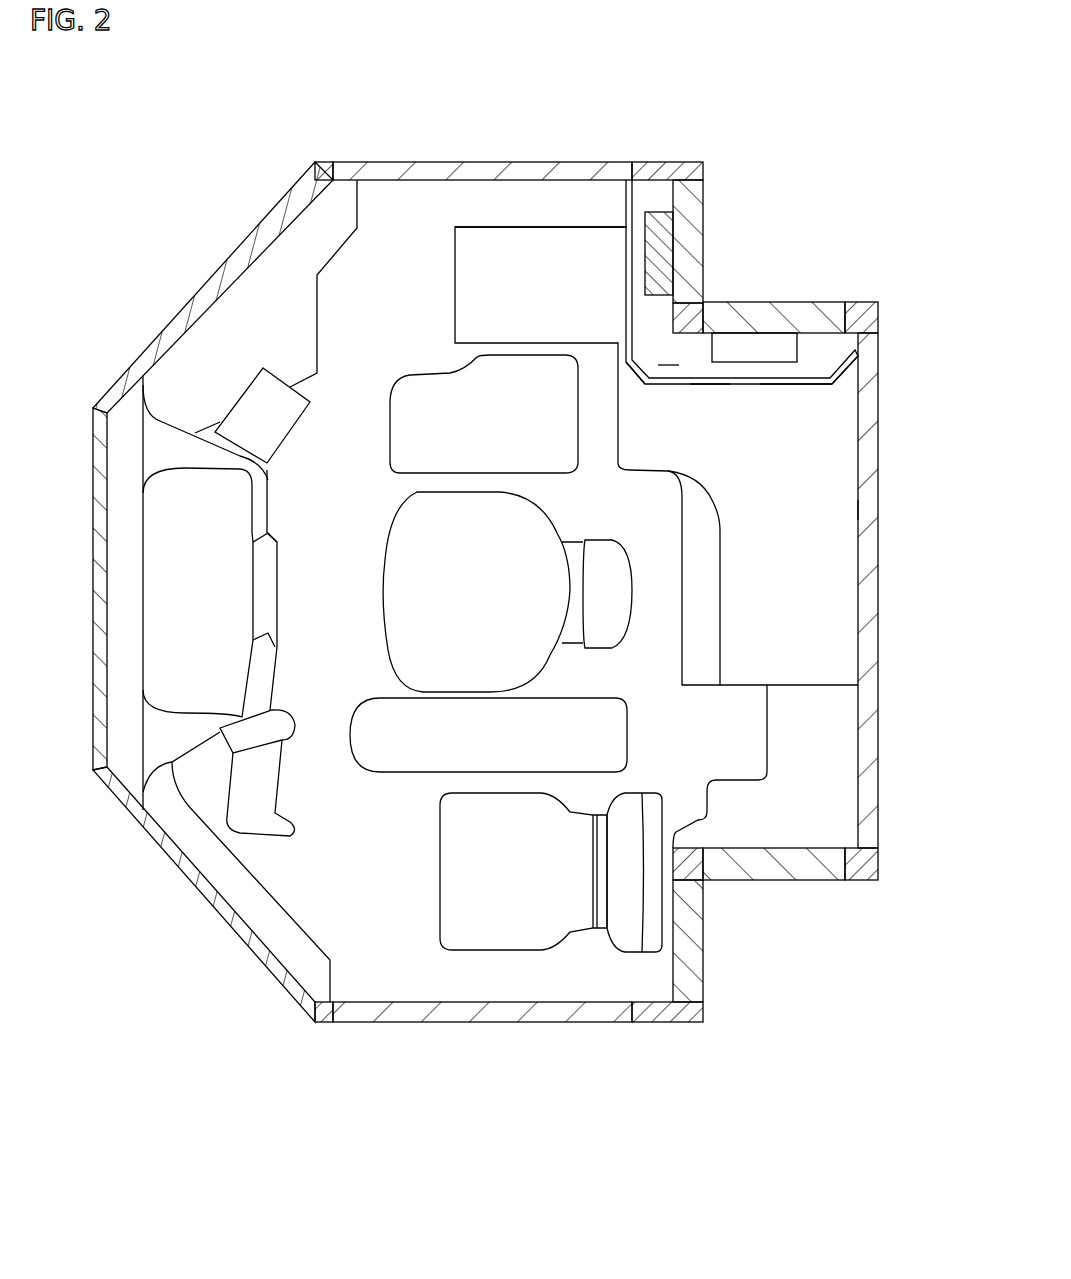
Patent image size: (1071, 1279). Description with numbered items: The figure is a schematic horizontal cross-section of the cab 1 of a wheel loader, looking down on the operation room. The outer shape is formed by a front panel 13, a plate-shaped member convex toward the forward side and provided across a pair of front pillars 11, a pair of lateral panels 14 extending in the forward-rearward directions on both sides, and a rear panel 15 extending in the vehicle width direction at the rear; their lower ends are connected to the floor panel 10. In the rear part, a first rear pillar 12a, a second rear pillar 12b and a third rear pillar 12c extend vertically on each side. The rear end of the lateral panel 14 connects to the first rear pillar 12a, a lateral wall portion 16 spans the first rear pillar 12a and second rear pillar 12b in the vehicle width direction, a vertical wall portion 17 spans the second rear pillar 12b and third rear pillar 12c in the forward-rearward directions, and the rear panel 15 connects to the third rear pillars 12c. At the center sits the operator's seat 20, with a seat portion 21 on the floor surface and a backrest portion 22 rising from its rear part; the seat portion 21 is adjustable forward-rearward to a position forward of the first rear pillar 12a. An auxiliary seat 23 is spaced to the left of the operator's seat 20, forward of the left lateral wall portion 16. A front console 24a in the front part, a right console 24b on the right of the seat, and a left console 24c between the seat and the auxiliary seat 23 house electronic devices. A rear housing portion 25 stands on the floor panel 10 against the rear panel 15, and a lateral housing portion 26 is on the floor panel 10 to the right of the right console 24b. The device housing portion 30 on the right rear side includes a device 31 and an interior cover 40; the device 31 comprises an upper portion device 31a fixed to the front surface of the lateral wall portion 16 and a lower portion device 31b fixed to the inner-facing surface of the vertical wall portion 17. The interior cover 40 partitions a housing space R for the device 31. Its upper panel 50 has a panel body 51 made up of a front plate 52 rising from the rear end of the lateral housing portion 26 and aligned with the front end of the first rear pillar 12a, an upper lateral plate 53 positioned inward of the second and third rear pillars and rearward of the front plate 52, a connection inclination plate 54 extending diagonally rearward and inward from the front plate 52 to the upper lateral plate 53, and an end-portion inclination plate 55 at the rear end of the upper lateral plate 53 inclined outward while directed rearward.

The cab 1 is at (190, 206).
The floor panel 10 is at (385, 210).
The front pillar 11 is at (322, 165).
The first rear pillar 12a is at (658, 1068).
The second rear pillar 12b is at (688, 315).
The third rear pillar 12c is at (905, 915).
The front panel 13 is at (120, 388).
The lateral panel 14 is at (476, 172).
The rear panel 15 is at (868, 580).
The lateral wall portion 16 is at (700, 195).
The vertical wall portion 17 is at (792, 318).
The operator's seat 20 is at (400, 557).
The seat portion 21 is at (418, 614).
The backrest portion 22 is at (618, 622).
The auxiliary seat 23 is at (462, 868).
The front console 24a is at (235, 502).
The right console 24b is at (428, 395).
The left console 24c is at (382, 757).
The rear housing portion 25 is at (840, 508).
The lateral housing portion 26 is at (519, 238).
The device housing portion 30 is at (664, 392).
The device 31 is at (763, 261).
The upper portion device 31a is at (660, 250).
The lower portion device 31b is at (755, 342).
The interior cover 40 is at (783, 427).
The upper panel 50 is at (750, 392).
The panel body 51 is at (796, 391).
The front plate 52 is at (625, 256).
The upper lateral plate 53 is at (710, 386).
The connection inclination plate 54 is at (628, 380).
The end-portion inclination plate 55 is at (858, 362).
The housing space R is at (668, 351).